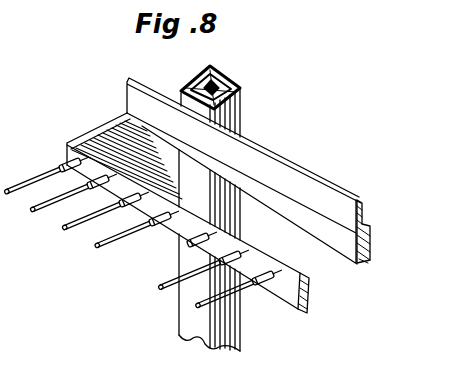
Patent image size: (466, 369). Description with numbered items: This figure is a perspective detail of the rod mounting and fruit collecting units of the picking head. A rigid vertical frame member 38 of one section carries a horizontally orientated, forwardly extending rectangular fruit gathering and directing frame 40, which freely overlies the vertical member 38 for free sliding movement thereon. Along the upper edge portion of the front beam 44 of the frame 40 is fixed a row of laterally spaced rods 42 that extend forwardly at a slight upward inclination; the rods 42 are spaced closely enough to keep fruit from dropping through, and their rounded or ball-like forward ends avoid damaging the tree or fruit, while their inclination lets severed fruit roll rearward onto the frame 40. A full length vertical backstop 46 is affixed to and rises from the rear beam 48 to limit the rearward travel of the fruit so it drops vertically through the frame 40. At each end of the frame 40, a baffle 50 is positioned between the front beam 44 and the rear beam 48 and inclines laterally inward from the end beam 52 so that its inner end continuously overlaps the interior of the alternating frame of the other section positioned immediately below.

The vertical frame member 38 is at (268, 95).
The fruit gathering and directing frame 40 is at (277, 185).
The rod 42 is at (99, 253).
The front beam 44 is at (333, 293).
The vertical backstop 46 is at (320, 197).
The rear beam 48 is at (331, 246).
The baffle 50 is at (207, 178).
The end beam 52 is at (113, 126).